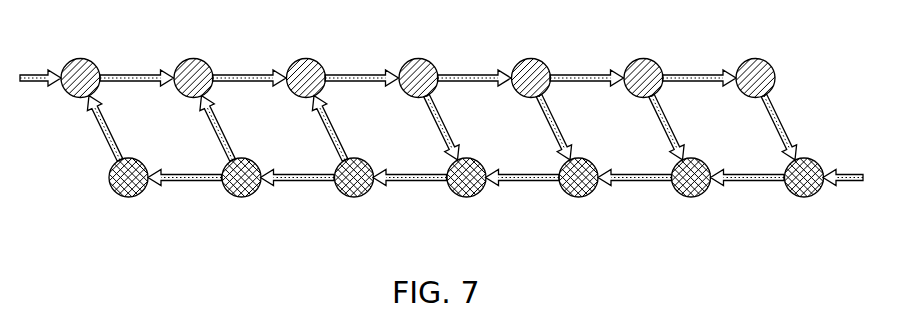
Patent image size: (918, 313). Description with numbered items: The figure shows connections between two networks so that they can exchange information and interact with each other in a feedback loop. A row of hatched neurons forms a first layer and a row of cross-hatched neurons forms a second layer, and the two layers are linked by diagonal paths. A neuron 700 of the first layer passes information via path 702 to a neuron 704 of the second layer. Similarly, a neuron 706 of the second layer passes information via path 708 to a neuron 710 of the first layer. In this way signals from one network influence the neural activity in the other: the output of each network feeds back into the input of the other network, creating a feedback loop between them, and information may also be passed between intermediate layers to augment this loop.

The neuron 700 is at (529, 58).
The path 702 is at (550, 110).
The neuron 704 is at (584, 197).
The neuron 706 is at (244, 198).
The path 708 is at (217, 118).
The neuron 710 is at (193, 58).